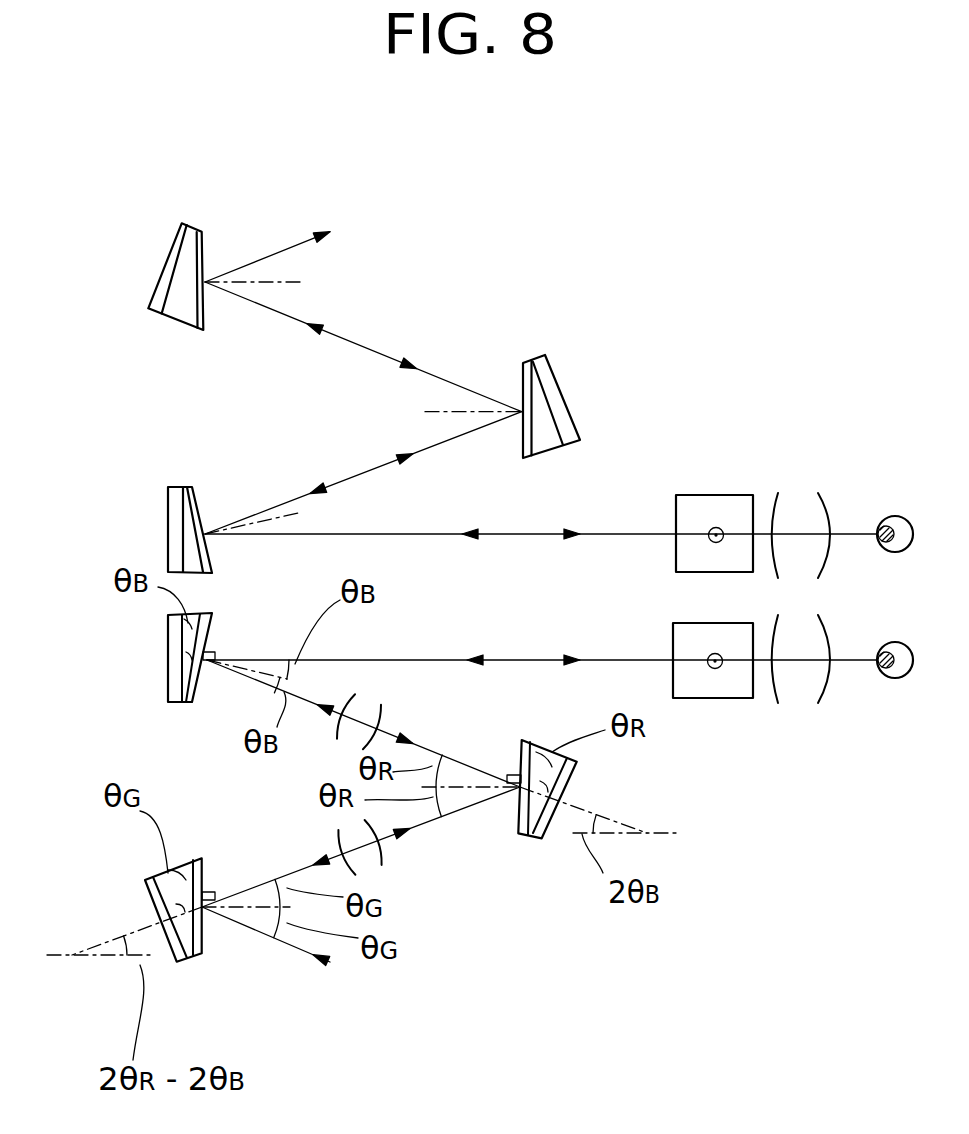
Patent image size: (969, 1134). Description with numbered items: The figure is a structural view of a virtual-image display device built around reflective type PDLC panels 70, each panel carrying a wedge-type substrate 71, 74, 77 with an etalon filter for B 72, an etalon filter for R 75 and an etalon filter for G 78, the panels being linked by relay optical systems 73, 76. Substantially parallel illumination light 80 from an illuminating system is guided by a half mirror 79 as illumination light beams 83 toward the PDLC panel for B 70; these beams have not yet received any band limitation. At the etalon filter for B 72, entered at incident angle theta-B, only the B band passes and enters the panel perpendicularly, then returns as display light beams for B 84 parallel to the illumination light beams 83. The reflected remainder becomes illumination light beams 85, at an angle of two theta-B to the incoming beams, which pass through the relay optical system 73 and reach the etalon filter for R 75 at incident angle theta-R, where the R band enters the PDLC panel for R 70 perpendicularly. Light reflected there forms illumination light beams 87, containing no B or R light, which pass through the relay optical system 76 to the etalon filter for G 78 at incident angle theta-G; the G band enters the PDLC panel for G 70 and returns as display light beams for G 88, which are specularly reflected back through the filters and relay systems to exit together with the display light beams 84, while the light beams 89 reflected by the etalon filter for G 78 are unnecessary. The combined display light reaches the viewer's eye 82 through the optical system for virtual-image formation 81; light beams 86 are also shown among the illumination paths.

The reflective type PDLC panel 70 is at (173, 702).
The wedge-type substrate 71 is at (197, 613).
The etalon filter for B 72 is at (203, 627).
The relay optical system 73 is at (352, 735).
The wedge-type substrate 74 is at (538, 750).
The etalon filter for R 75 is at (527, 737).
The relay optical system 76 is at (385, 860).
The wedge-type substrate 77 is at (180, 868).
The etalon filter for G 78 is at (197, 857).
The half mirror 79 is at (740, 690).
The illumination light 80 is at (715, 670).
The optical system for virtual-image formation 81 is at (805, 695).
The viewer's eye 82 is at (897, 680).
The illumination light beams 83 is at (478, 655).
The display light beams for B 84 is at (563, 655).
The illumination light beams 85 is at (417, 733).
The light beam toward blue prism 86 is at (322, 700).
The illumination light beams 87 is at (313, 858).
The display light beams for G 88 is at (413, 827).
The light beams reflected by the etalon filter for G 89 is at (318, 965).